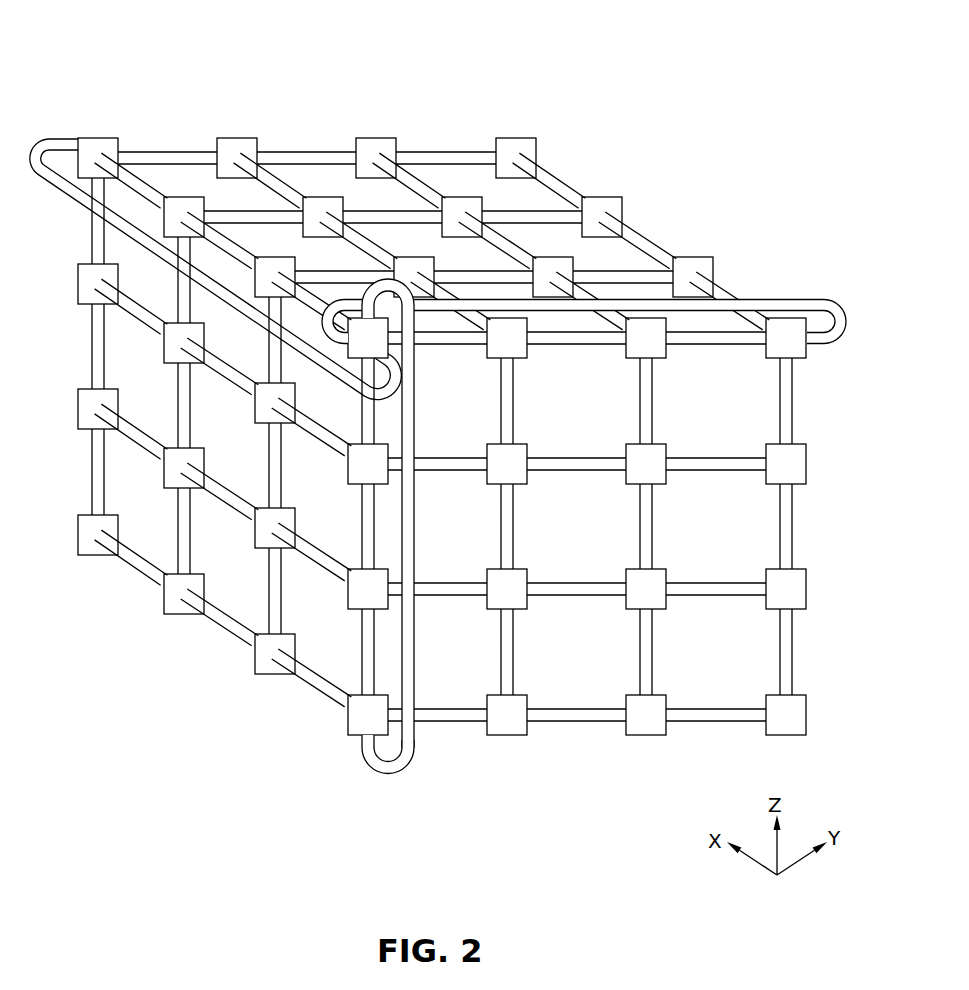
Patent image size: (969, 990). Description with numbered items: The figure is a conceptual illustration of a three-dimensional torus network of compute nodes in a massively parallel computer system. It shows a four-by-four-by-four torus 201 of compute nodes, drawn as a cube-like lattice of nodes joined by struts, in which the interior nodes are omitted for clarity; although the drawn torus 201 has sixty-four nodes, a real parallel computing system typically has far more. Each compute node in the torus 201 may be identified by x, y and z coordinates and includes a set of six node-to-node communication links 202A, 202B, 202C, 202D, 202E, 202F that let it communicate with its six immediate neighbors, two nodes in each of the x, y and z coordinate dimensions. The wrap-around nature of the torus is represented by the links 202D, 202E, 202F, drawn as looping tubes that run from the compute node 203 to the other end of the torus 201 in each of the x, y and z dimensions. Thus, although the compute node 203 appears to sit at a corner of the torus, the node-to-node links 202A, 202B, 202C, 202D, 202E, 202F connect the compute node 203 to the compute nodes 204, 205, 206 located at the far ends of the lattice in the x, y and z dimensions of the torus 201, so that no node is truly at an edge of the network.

The torus 201 is at (578, 70).
The node-to-node communication link 202A is at (433, 346).
The node-to-node communication link 202B is at (373, 420).
The node-to-node communication link 202C is at (325, 303).
The node-to-node communication link 202D is at (812, 298).
The node-to-node communication link 202E is at (383, 776).
The node-to-node communication link 202F is at (50, 137).
The compute node 203 is at (357, 343).
The compute node 204 is at (98, 139).
The compute node 205 is at (789, 346).
The compute node 206 is at (352, 727).